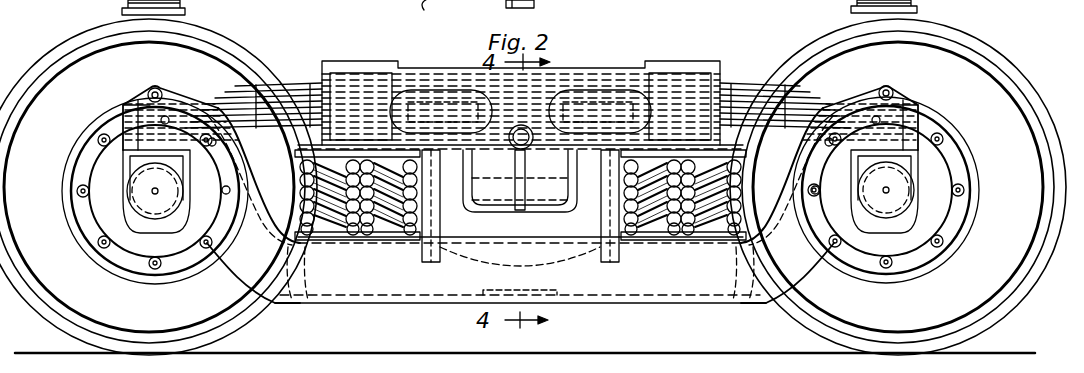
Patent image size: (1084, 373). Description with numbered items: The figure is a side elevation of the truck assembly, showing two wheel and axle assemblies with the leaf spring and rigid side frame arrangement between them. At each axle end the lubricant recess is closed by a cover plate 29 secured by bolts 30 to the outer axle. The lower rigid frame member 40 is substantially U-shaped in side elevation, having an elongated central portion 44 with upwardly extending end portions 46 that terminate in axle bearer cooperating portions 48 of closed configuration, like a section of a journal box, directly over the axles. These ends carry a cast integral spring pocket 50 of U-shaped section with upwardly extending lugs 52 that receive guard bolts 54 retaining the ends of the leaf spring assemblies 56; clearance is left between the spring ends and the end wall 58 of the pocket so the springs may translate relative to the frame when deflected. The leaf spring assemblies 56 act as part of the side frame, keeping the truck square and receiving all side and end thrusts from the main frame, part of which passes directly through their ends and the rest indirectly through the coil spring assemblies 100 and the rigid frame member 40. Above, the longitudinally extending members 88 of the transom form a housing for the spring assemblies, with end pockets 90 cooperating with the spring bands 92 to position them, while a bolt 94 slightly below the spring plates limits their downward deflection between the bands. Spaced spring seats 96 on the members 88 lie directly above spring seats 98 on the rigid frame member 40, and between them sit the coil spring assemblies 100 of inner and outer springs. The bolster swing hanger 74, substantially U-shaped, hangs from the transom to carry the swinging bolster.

The cover plate 29 is at (915, 236).
The bolts 30 is at (885, 268).
The rigid frame member 40 is at (378, 300).
The elongated central portion 44 is at (578, 292).
The upwardly extending end portions 46 is at (236, 275).
The axle bearer cooperating portions 48 is at (130, 222).
The spring pocket 50 is at (142, 100).
The upwardly extending lugs 52 is at (168, 92).
The bolts 54 is at (154, 87).
The leaf spring assemblies 56 is at (722, 115).
The end wall 58 is at (916, 106).
The bolster swing hanger 74 is at (585, 228).
The longitudinally extending members 88 is at (438, 13).
The end pockets 90 is at (341, 67).
The spring bands 92 is at (374, 74).
The bolt 94 is at (524, 128).
The spring seats 96 is at (296, 153).
The spring seats 98 is at (298, 240).
The coil spring assemblies 100 is at (352, 241).